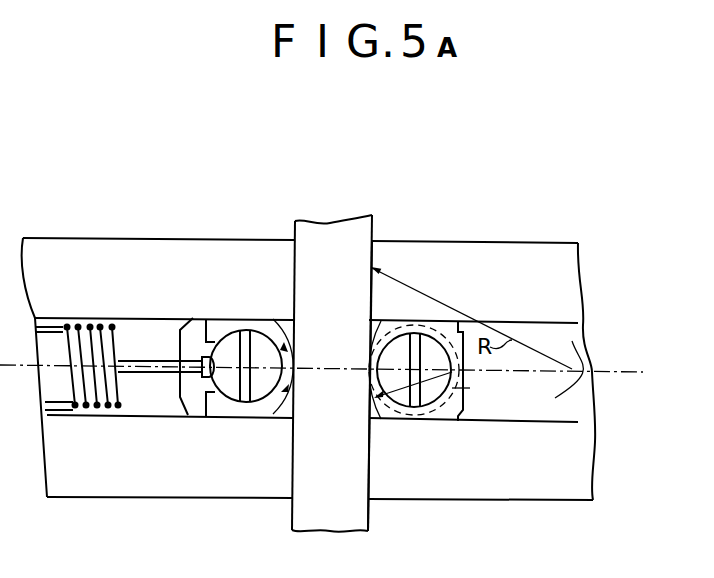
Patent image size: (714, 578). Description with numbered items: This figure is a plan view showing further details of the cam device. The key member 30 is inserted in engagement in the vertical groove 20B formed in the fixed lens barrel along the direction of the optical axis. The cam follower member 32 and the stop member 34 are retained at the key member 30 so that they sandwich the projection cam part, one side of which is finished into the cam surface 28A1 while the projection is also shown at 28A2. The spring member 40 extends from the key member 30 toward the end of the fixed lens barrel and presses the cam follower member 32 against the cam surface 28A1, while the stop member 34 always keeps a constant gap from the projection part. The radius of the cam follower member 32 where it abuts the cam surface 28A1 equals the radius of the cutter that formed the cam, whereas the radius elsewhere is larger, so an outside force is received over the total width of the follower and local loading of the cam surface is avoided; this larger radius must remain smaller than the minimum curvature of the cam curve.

The vertical groove 20B is at (590, 372).
The cam surface 28A1 is at (369, 261).
The shaft portion 28A2 is at (297, 231).
The key member 30 is at (192, 398).
The cam follower member 32 is at (382, 319).
The stop member 34 is at (270, 328).
The spring member 40 is at (72, 410).